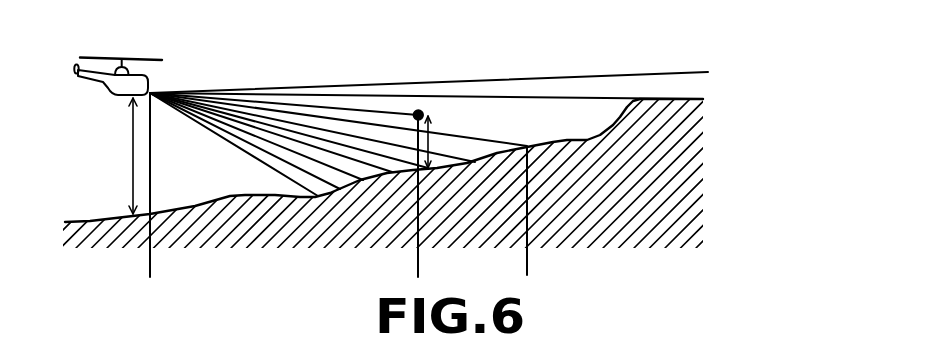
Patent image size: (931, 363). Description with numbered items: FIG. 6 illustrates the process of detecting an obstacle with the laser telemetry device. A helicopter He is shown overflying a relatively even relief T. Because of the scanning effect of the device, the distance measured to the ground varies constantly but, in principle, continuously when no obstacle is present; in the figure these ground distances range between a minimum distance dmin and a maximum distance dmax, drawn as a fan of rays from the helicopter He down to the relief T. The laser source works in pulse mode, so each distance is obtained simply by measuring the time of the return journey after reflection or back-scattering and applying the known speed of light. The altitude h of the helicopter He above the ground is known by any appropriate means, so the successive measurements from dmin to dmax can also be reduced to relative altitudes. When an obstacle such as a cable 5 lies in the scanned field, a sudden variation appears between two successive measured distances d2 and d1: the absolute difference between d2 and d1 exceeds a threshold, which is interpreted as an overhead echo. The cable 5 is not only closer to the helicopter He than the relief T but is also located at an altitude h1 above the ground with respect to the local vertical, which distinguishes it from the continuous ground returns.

The cable 5 is at (425, 110).
The helicopter He is at (104, 86).
The relief T is at (230, 228).
The altitude of the helicopter h is at (125, 156).
The altitude of the cable h1 is at (429, 145).
The first measured distance d1 is at (453, 131).
The second measured distance d2 is at (349, 107).
The maximum measured distance dmax is at (290, 86).
The minimum measured distance dmin is at (230, 143).